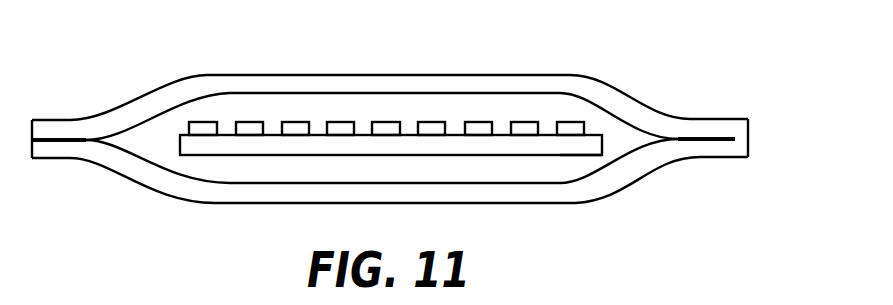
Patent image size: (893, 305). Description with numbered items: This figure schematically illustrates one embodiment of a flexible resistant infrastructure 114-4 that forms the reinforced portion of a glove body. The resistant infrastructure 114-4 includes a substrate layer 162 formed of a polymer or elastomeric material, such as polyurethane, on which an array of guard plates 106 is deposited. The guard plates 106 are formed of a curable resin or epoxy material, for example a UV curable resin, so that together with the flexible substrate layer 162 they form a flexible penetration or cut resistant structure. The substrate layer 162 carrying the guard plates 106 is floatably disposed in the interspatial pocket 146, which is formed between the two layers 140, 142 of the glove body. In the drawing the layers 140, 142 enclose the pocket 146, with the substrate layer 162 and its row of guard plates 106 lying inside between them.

The guard plates 106 is at (203, 122).
The resistant infrastructure 114-4 is at (567, 123).
The layer 140 is at (122, 110).
The layer 142 is at (100, 170).
The interspatial pocket 146 is at (391, 160).
The substrate layer 162 is at (592, 143).